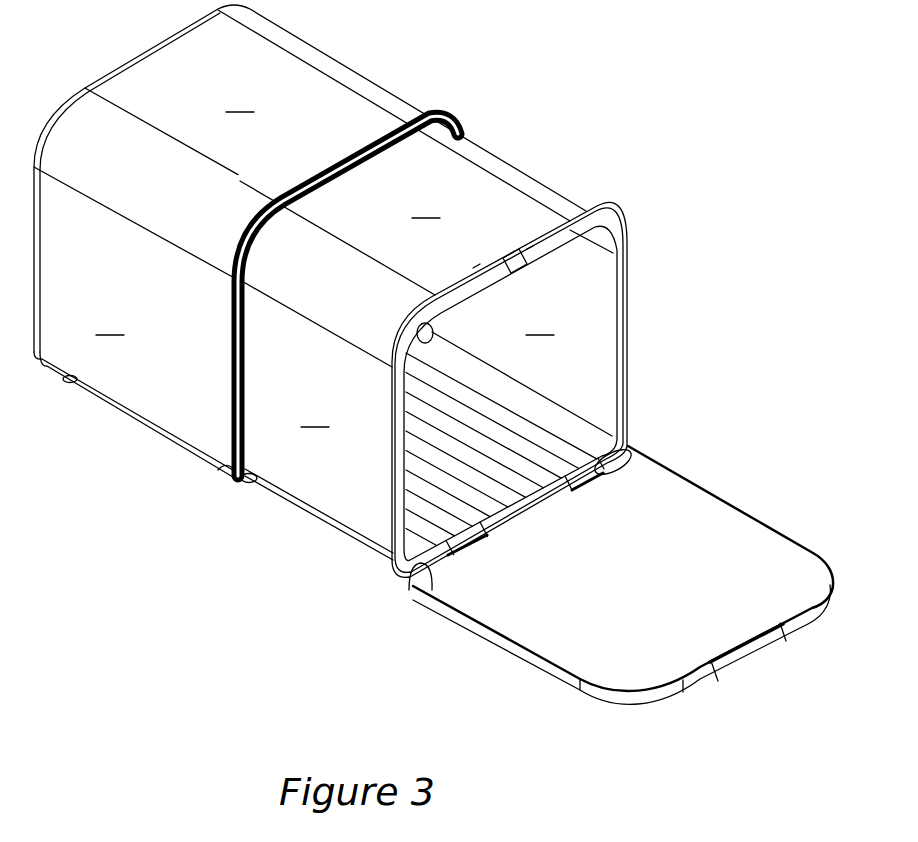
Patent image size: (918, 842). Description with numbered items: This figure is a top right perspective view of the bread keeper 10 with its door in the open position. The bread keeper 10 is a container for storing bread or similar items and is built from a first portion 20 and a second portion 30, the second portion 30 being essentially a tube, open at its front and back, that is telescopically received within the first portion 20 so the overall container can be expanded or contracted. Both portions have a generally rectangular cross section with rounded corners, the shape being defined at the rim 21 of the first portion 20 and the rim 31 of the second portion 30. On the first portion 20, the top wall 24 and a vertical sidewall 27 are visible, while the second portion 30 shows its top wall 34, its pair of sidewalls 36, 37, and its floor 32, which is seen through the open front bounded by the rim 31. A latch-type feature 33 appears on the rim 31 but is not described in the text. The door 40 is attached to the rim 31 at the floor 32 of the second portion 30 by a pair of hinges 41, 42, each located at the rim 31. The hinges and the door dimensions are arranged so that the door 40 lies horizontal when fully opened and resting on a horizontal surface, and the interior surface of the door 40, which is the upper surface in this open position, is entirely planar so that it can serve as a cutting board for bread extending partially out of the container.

The bread keeper 10 is at (433, 354).
The first portion 20 is at (310, 242).
The rim 21 is at (438, 118).
The top wall 24 is at (169, 131).
The sidewall 27 is at (136, 251).
The second portion 30 is at (482, 352).
The rim 31 is at (605, 218).
The floor 32 is at (547, 420).
The latch catch 33 is at (533, 258).
The top wall 34 is at (340, 238).
The sidewall 36 is at (515, 333).
The sidewall 37 is at (316, 354).
The door 40 is at (613, 562).
The hinge 41 is at (450, 566).
The hinge 42 is at (620, 460).